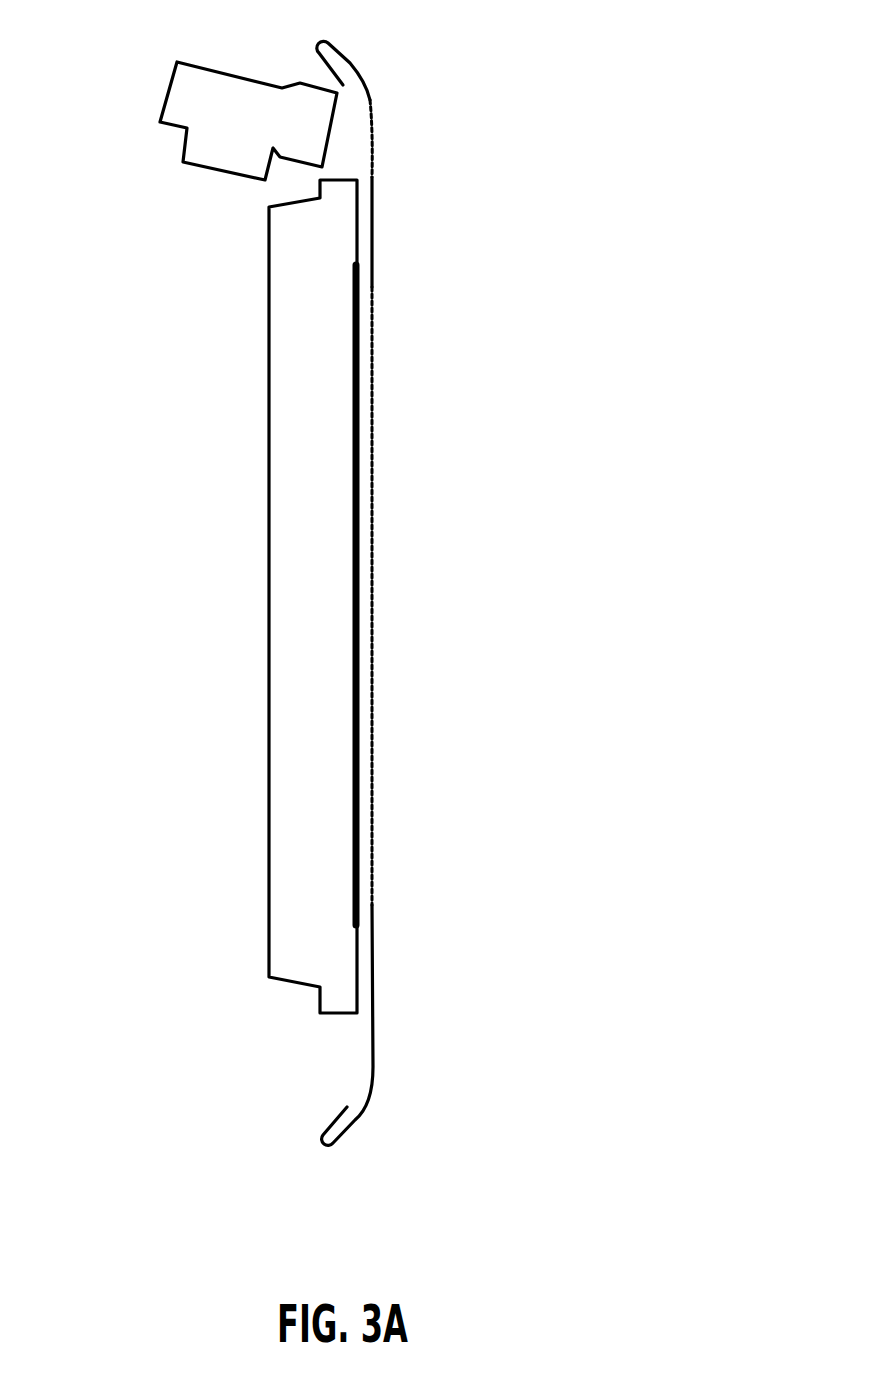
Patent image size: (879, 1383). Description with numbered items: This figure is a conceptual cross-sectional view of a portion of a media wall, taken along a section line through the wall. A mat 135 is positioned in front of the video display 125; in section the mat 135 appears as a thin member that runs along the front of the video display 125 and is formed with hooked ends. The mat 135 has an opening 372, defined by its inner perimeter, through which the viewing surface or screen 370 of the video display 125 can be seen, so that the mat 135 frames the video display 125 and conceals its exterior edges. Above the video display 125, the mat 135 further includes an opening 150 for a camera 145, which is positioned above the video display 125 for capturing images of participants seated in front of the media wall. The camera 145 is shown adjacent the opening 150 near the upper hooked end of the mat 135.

The video display 125 is at (327, 568).
The mat 135 is at (332, 43).
The camera 145 is at (187, 128).
The opening for a camera 150 is at (397, 130).
The viewing surface or screen 370 is at (360, 367).
The opening 372 is at (417, 482).